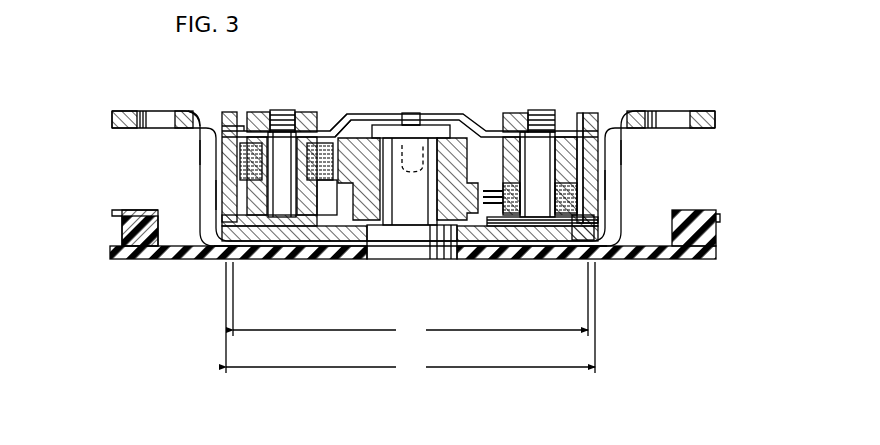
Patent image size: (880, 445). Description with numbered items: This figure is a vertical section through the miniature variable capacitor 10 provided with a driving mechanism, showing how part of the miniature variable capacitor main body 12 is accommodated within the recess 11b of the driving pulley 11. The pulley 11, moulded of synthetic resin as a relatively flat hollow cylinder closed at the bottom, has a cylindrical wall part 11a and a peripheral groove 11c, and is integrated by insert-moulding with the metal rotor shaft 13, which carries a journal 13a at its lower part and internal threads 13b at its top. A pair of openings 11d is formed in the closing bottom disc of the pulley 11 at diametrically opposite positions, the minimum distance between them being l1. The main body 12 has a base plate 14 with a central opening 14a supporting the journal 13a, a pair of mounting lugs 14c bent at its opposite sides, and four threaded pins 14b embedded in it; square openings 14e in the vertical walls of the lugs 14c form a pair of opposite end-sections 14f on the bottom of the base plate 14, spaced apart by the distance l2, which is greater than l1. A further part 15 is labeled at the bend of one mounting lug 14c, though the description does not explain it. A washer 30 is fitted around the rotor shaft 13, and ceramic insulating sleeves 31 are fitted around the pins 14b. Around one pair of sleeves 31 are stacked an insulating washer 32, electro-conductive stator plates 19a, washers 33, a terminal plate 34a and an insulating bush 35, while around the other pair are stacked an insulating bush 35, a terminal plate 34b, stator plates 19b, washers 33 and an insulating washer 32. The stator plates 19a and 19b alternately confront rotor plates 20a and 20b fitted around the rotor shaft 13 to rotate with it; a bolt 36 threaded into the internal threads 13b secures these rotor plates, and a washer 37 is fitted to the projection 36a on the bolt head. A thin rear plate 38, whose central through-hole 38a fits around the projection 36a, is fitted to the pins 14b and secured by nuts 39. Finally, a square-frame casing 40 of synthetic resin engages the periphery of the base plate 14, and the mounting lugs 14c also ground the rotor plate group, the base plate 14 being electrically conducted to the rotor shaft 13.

The miniature variable capacitor 10 is at (202, 60).
The driving pulley 11 is at (129, 261).
The cylindrical wall part 11a is at (129, 227).
The recess 11b is at (153, 210).
The peripheral groove 11c is at (122, 237).
The openings 11d is at (172, 260).
The miniature variable capacitor main body 12 is at (199, 152).
The rotor shaft 13 is at (411, 235).
The journal 13a is at (412, 272).
The internal threads 13b is at (425, 145).
The base plate 14 is at (625, 205).
The opening 14a is at (400, 250).
The pins 14b is at (283, 110).
The mounting lugs 14c is at (122, 113).
The square openings 14e is at (207, 200).
The opposite end-sections 14f is at (214, 246).
The housing bend 15 is at (606, 150).
The stator plates 19a is at (490, 195).
The stator plates 19b is at (327, 183).
The rotor plates 20a is at (475, 241).
The rotor plates 20b is at (360, 138).
The washer 30 is at (338, 241).
The insulating sleeves 31 is at (262, 224).
The insulating washer 32 is at (258, 112).
The washers 33 is at (230, 175).
The terminal plate 34a is at (580, 140).
The terminal plate 34b is at (243, 112).
The insulating bush 35 is at (240, 240).
The bolt 36 is at (470, 118).
The projection 36a is at (412, 113).
The washer 37 is at (395, 125).
The rear plate 38 is at (337, 130).
The through-hole 38a is at (420, 124).
The nuts 39 is at (307, 112).
The casing 40 is at (200, 122).
The minimum distance between openings l1 is at (410, 307).
The distance between end-sections l2 is at (410, 326).